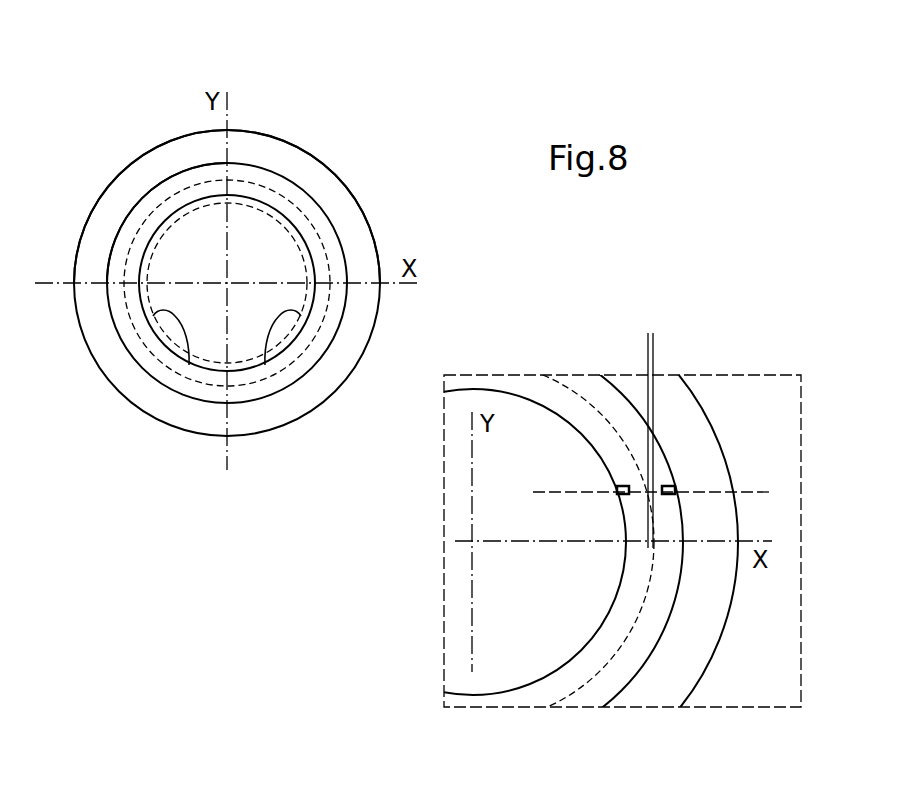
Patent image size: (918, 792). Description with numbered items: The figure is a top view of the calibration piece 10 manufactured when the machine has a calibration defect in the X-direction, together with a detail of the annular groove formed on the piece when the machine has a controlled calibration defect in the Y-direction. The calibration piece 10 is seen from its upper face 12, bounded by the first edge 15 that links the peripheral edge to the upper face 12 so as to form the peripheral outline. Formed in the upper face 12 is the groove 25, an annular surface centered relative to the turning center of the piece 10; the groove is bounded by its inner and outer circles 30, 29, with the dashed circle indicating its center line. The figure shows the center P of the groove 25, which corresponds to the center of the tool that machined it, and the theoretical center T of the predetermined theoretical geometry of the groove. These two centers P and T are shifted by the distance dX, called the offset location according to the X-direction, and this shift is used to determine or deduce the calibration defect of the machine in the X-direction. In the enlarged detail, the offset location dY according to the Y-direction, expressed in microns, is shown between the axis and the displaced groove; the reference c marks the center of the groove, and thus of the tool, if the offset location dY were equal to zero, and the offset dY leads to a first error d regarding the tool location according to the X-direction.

The calibration piece 10 is at (298, 100).
The upper face 12 is at (123, 197).
The first edge 15 is at (333, 167).
The groove 25 is at (153, 193).
The inner ring outer circle 29 is at (320, 368).
The inner ring bore circle 30 is at (265, 365).
The center of the groove P is at (279, 195).
The theoretical center T is at (189, 365).
The center of the groove at zero Y-offset c is at (650, 508).
The first error d is at (618, 345).
The offset location according to the X-direction dX is at (311, 283).
The offset location according to the Y-direction dY is at (763, 492).